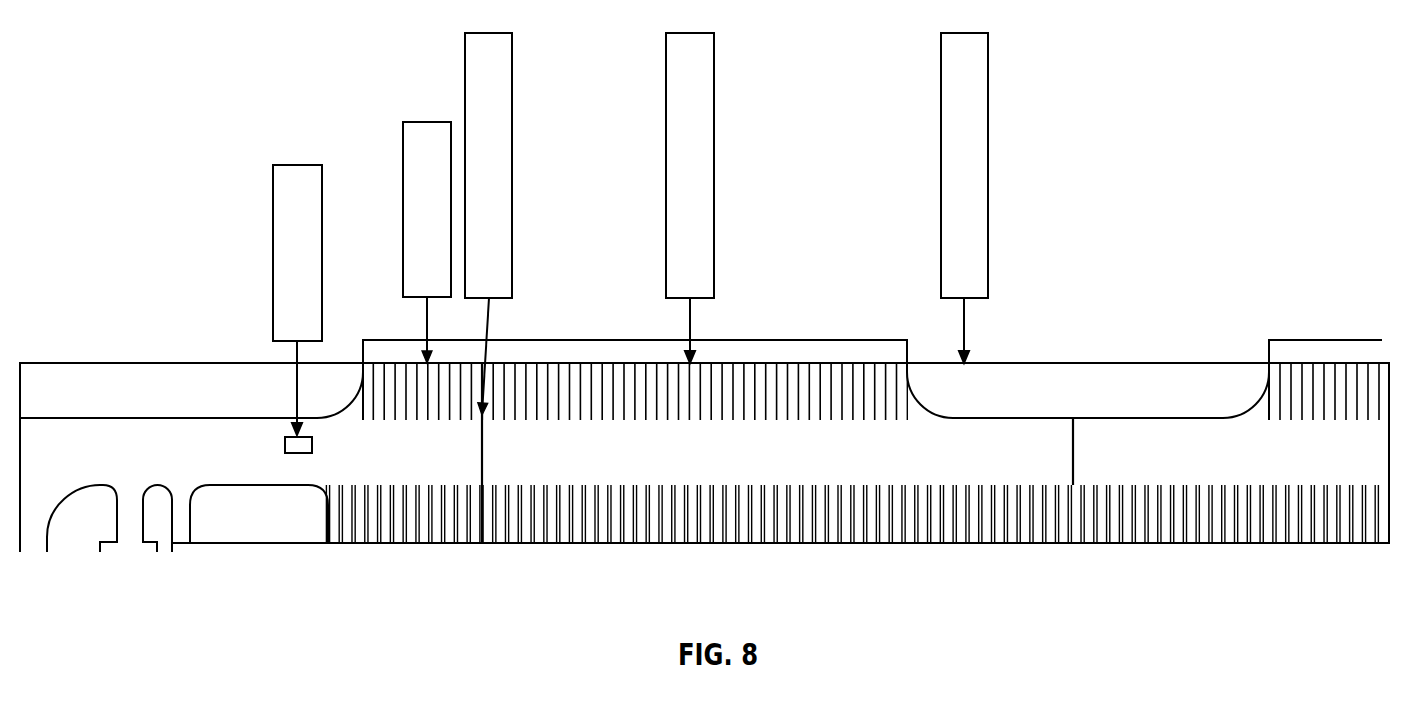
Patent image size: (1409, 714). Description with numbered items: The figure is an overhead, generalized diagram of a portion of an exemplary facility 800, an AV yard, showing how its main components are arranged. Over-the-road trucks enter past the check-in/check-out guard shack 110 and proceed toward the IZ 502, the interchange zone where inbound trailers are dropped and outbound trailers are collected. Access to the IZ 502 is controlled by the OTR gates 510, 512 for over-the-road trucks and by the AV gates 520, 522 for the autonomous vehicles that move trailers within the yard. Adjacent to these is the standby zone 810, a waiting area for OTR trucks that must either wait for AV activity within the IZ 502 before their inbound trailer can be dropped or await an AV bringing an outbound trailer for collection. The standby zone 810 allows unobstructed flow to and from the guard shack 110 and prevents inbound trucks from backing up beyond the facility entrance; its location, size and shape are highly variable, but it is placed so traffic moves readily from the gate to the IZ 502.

The guard shack 110 is at (307, 457).
The IZ 502 is at (712, 358).
The OTR gate 510 is at (430, 288).
The OTR gate 512 is at (480, 453).
The AV gate 520 is at (1141, 451).
The AV gate 522 is at (1078, 462).
The facility 800 is at (1028, 353).
The standby zone 810 is at (390, 389).